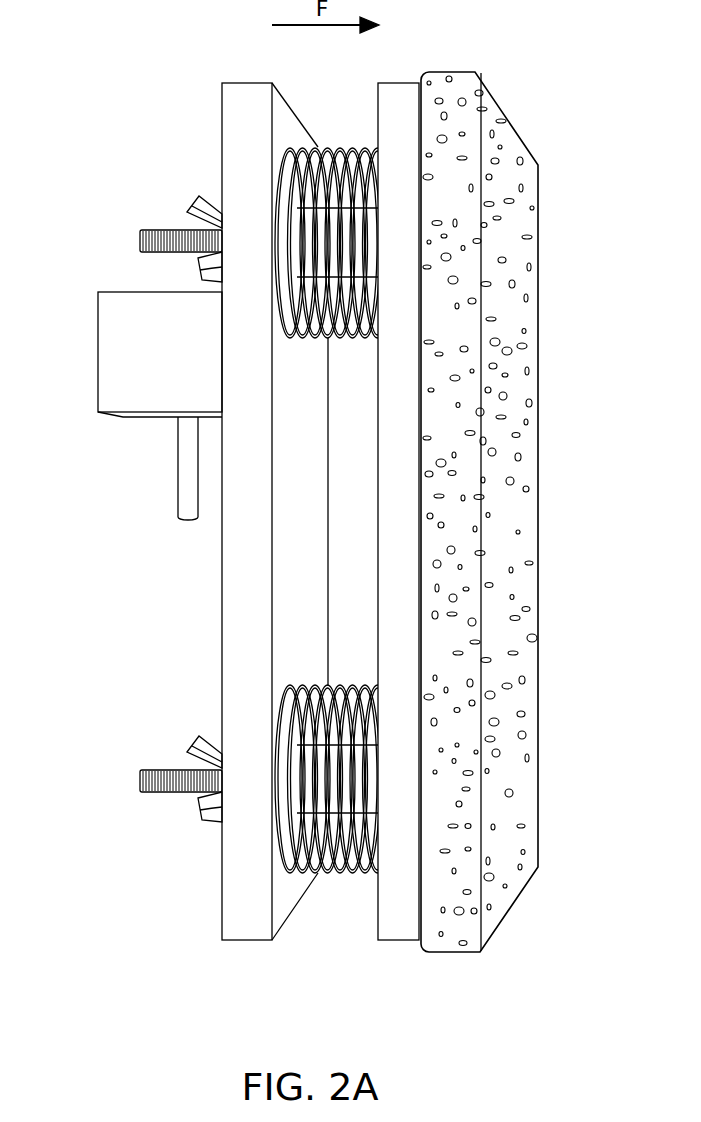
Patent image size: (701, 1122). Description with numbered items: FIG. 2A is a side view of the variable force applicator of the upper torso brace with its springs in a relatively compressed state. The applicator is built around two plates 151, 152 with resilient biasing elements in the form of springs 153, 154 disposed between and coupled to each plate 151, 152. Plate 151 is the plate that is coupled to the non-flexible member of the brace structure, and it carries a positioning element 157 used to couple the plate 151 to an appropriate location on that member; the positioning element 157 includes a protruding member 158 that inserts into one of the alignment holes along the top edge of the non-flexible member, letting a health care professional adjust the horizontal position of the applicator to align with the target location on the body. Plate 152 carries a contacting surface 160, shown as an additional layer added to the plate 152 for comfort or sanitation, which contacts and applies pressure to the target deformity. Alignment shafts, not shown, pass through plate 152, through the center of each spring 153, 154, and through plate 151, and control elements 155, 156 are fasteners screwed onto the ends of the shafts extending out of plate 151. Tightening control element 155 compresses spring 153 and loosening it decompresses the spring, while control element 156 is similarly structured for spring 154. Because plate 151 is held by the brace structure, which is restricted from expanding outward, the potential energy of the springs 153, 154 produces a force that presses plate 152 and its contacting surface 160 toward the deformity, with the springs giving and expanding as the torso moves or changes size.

The plate 151 is at (238, 118).
The plate 152 is at (395, 105).
The spring 153 is at (372, 150).
The spring 154 is at (340, 876).
The control element 155 is at (205, 196).
The control element 156 is at (200, 830).
The positioning element 157 is at (125, 305).
The protruding member 158 is at (182, 468).
The contacting surface 160 is at (512, 882).